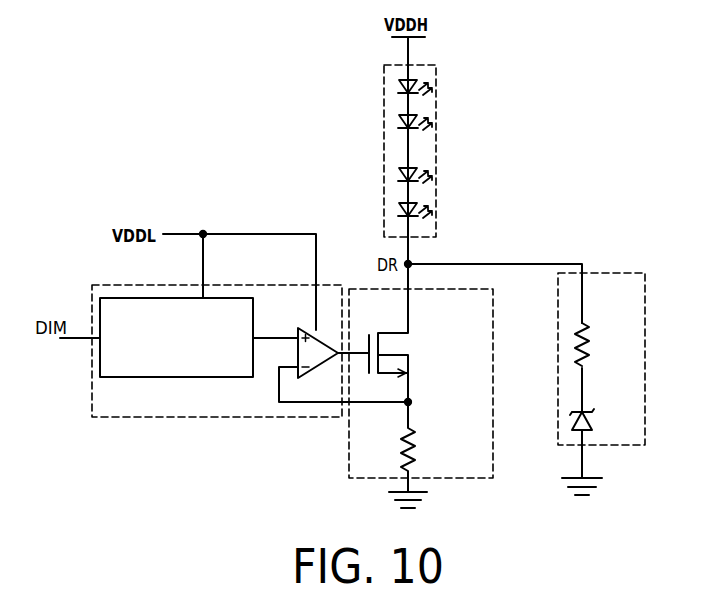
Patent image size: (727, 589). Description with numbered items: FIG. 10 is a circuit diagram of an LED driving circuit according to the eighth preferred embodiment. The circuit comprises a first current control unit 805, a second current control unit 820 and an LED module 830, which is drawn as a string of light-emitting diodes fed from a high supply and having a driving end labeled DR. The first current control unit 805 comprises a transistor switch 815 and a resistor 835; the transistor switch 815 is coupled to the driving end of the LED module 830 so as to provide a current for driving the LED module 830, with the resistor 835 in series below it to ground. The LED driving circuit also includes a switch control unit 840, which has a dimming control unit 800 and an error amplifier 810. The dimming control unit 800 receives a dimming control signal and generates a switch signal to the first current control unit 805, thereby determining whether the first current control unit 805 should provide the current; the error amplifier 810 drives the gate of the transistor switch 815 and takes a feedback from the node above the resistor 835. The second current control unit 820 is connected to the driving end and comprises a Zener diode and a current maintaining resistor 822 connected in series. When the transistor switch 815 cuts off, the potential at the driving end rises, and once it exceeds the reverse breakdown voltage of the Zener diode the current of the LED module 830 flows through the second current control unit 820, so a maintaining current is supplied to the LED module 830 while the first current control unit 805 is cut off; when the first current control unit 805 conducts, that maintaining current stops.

The dimming control unit 800 is at (191, 378).
The first current control unit 805 is at (493, 330).
The error amplifier 810 is at (311, 335).
The transistor switch 815 is at (425, 364).
The second current control unit 820 is at (612, 360).
The current maintaining resistor 822 is at (590, 345).
The LED module 830 is at (383, 130).
The resistor 835 is at (413, 441).
The switch control unit 840 is at (258, 418).